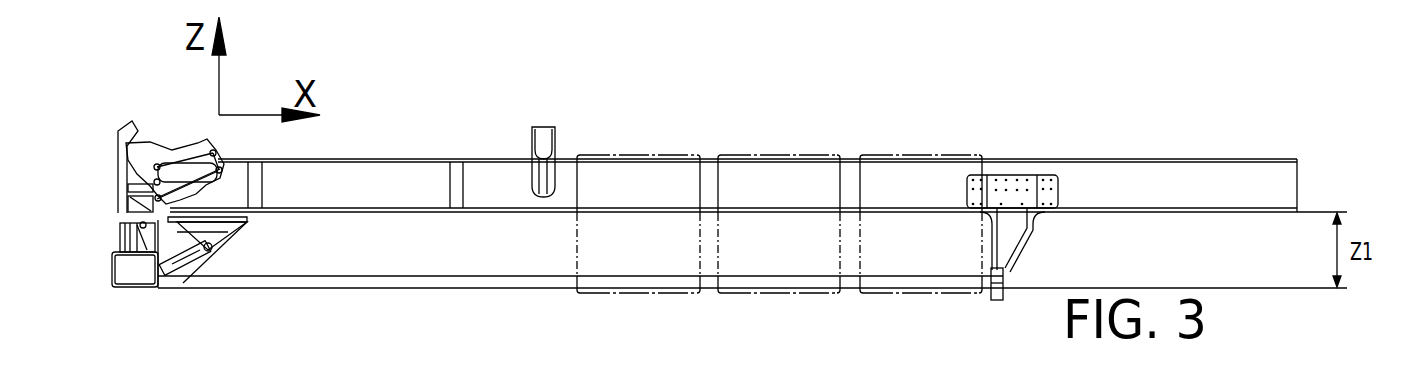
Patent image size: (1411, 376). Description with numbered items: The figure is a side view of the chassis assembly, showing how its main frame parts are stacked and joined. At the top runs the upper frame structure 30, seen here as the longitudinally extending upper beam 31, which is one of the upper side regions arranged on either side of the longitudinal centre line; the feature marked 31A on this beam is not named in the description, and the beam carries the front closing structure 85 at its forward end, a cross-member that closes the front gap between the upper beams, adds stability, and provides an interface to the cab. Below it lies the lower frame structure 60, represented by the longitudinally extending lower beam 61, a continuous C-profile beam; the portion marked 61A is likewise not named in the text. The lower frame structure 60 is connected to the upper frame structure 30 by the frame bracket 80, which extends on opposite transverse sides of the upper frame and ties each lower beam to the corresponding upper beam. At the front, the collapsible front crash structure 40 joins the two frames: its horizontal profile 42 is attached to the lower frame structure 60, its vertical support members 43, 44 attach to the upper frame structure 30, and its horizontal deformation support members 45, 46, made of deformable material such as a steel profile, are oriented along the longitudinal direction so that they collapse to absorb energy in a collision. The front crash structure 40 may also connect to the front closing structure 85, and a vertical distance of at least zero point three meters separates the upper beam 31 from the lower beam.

The upper frame structure 30 is at (733, 145).
The longitudinally extending upper beam 31 is at (1235, 185).
The mounting bracket of upper beam 31A is at (568, 180).
The front crash structure 40 is at (138, 206).
The horizontal profile 42 is at (135, 270).
The vertical support member 43 is at (117, 238).
The vertical support member 44 is at (138, 151).
The horizontal deformation support member 45 is at (170, 267).
The horizontal deformation support member 46 is at (152, 308).
The lower frame structure 60 is at (752, 283).
The longitudinally extending lower beam 61 is at (752, 284).
The rail portion 61A is at (467, 283).
The frame bracket 80 is at (1013, 185).
The front closing structure 85 is at (167, 157).